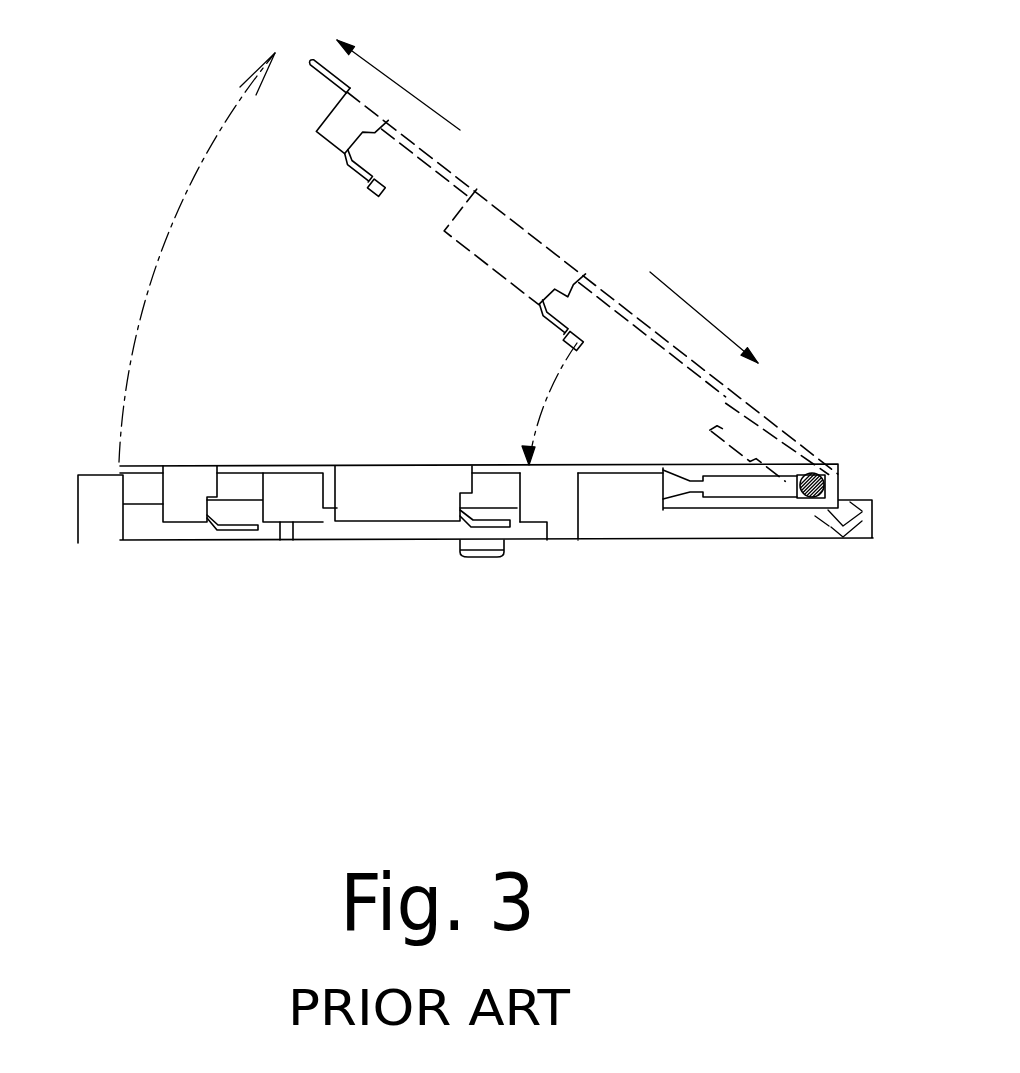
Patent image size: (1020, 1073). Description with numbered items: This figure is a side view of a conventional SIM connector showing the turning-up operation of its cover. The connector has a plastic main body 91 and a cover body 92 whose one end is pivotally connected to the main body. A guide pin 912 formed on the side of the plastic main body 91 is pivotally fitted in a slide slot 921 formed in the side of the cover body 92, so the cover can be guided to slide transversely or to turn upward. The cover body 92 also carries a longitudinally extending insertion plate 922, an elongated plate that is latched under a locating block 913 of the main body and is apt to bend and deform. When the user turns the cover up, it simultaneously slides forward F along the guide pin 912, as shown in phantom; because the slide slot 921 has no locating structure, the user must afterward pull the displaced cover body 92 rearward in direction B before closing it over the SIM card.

The plastic main body 91 is at (88, 488).
The cover body 92 is at (520, 235).
The guide pin 912 is at (813, 500).
The locating block 913 is at (282, 543).
The slide slot 921 is at (793, 492).
The insertion plate 922 is at (245, 525).
The rearward direction arrow B is at (417, 98).
The forward sliding direction F is at (673, 290).